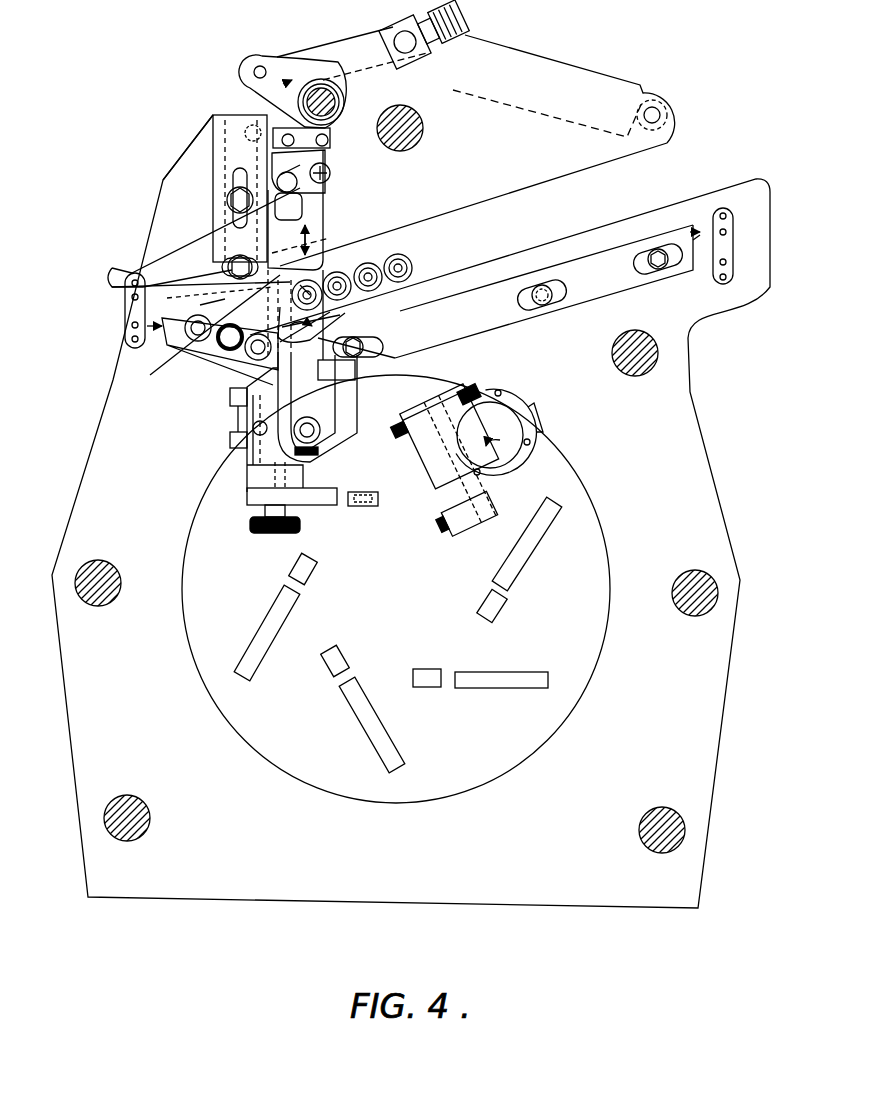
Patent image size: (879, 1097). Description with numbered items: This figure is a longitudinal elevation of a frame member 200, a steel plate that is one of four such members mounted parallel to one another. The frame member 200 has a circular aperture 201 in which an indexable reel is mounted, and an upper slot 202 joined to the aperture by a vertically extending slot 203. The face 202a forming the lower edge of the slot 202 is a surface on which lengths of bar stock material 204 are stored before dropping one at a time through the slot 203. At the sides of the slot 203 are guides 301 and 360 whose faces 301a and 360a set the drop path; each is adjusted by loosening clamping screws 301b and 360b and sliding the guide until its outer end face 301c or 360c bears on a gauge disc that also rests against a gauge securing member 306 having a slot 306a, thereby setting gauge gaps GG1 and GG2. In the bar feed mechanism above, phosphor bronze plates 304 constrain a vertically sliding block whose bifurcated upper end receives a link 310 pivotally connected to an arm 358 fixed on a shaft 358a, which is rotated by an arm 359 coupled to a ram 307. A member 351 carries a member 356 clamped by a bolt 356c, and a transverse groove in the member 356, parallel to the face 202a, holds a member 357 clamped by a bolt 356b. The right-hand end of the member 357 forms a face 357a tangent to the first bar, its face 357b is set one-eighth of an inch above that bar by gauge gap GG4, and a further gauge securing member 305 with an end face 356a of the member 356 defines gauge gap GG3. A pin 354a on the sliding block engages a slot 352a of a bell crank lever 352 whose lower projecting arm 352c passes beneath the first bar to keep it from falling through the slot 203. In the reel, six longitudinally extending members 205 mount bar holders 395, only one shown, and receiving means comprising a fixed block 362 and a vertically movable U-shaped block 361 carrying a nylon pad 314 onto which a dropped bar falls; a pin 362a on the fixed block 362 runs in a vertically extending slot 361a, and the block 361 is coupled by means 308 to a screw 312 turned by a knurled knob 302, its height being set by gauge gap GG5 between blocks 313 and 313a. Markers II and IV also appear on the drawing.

The frame member 200 is at (98, 460).
The circular aperture 201 is at (180, 588).
The slot 202 is at (637, 194).
The face 202a is at (553, 215).
The vertically extending slot 203 is at (373, 352).
The bar stock material 204 is at (410, 264).
The longitudinally extending member 205 is at (310, 500).
The guide member 301 is at (160, 378).
The face of guide 301a is at (317, 371).
The clamping screw 301b is at (222, 350).
The outer end face 301c is at (165, 345).
The knurled knob 302 is at (290, 535).
The phosphor bronze plates 304 is at (325, 220).
The further gauge securing member 305 is at (108, 275).
The gauge securing member 306 is at (755, 228).
The slot 306a is at (748, 207).
The ram 307 is at (470, 68).
The coupling means 308 is at (238, 480).
The link 310 is at (240, 96).
The screw 312 is at (250, 526).
The block 313 is at (228, 398).
The block 313a is at (232, 452).
The nylon pad 314 is at (320, 465).
The member 351 is at (331, 136).
The bell crank lever 352 is at (365, 328).
The slot 352a is at (332, 183).
The lower projecting arm 352c is at (347, 307).
The pin 354a is at (331, 165).
The member 356 is at (228, 212).
The end face 356a is at (165, 228).
The bolt 356b is at (222, 272).
The bolt 356c is at (217, 213).
The member 357 is at (150, 258).
The face 357a is at (370, 197).
The face 357b is at (210, 295).
The arm 358 is at (290, 55).
The shaft 358a is at (340, 103).
The arm 359 is at (372, 48).
The guide member 360 is at (528, 335).
The face of guide 360a is at (355, 378).
The clamping screw 360b is at (600, 277).
The outer end face 360c is at (695, 275).
The movable U-shaped block 361 is at (350, 430).
The vertically extending slot 361a is at (230, 412).
The fixed block 362 is at (246, 488).
The pin 362a is at (228, 442).
The bar holder 395 is at (495, 447).
The gauge gap GG1 is at (145, 330).
The gauge gap GG2 is at (693, 232).
The gauge gap GG3 is at (125, 292).
The gauge gap GG4 is at (357, 250).
The gauge gap GG5 is at (235, 425).
The view arrow II is at (105, 236).
The view arrow IV is at (108, 418).